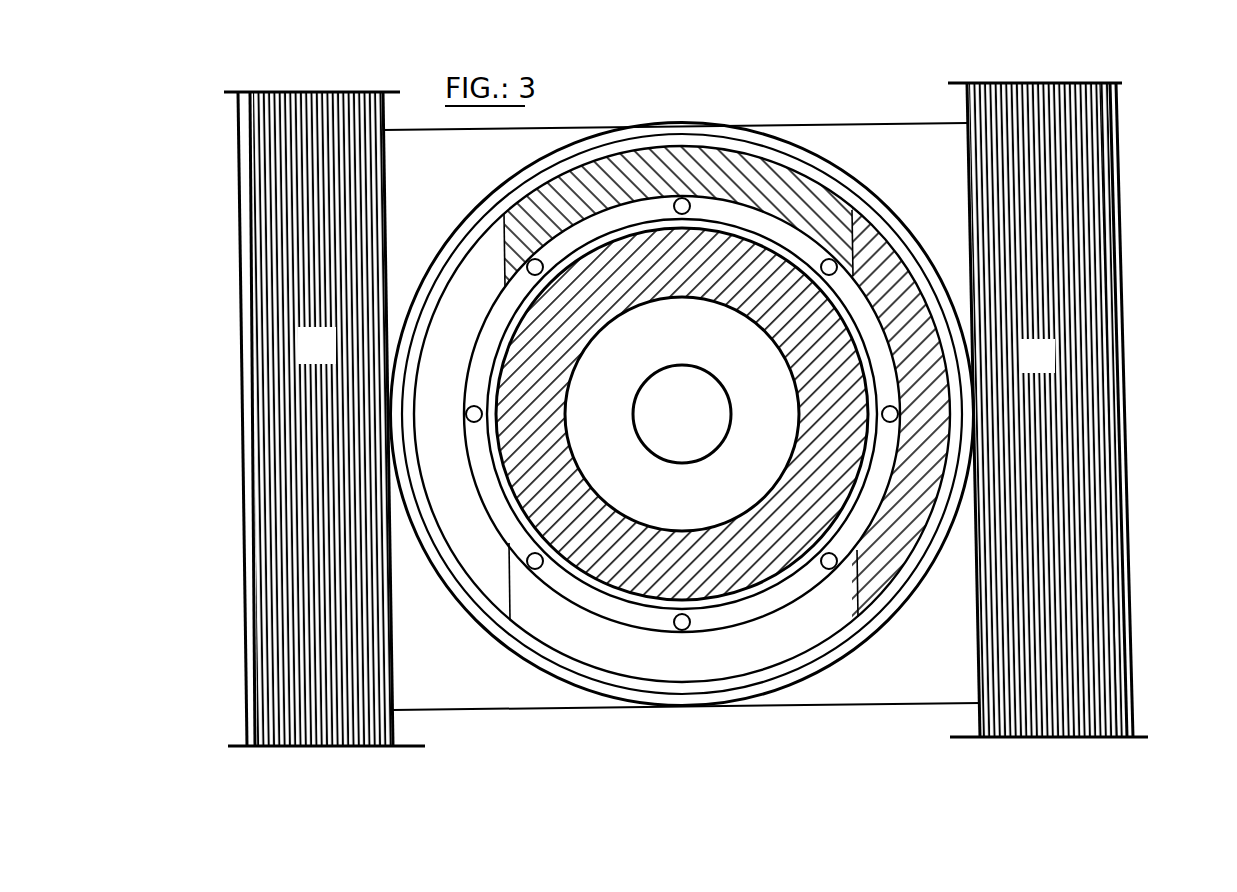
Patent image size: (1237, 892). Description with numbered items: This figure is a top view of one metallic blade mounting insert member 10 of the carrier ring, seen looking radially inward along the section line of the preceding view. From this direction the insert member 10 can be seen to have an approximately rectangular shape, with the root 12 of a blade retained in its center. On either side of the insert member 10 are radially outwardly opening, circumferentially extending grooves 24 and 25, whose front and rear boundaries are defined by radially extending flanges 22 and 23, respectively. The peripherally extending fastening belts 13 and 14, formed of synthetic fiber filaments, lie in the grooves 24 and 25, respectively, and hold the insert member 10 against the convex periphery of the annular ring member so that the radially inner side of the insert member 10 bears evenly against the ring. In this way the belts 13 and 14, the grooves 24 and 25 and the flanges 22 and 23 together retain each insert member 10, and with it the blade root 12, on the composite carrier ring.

The metallic blade mounting insert member 10 is at (829, 122).
The root of the blade 12 is at (612, 436).
The fastening belt 13 is at (331, 358).
The fastening belt 14 is at (1051, 368).
The radially extending flange 22 is at (240, 275).
The radially extending flange 23 is at (1121, 272).
The circumferentially extending groove 24 is at (267, 405).
The circumferentially extending groove 25 is at (1097, 358).